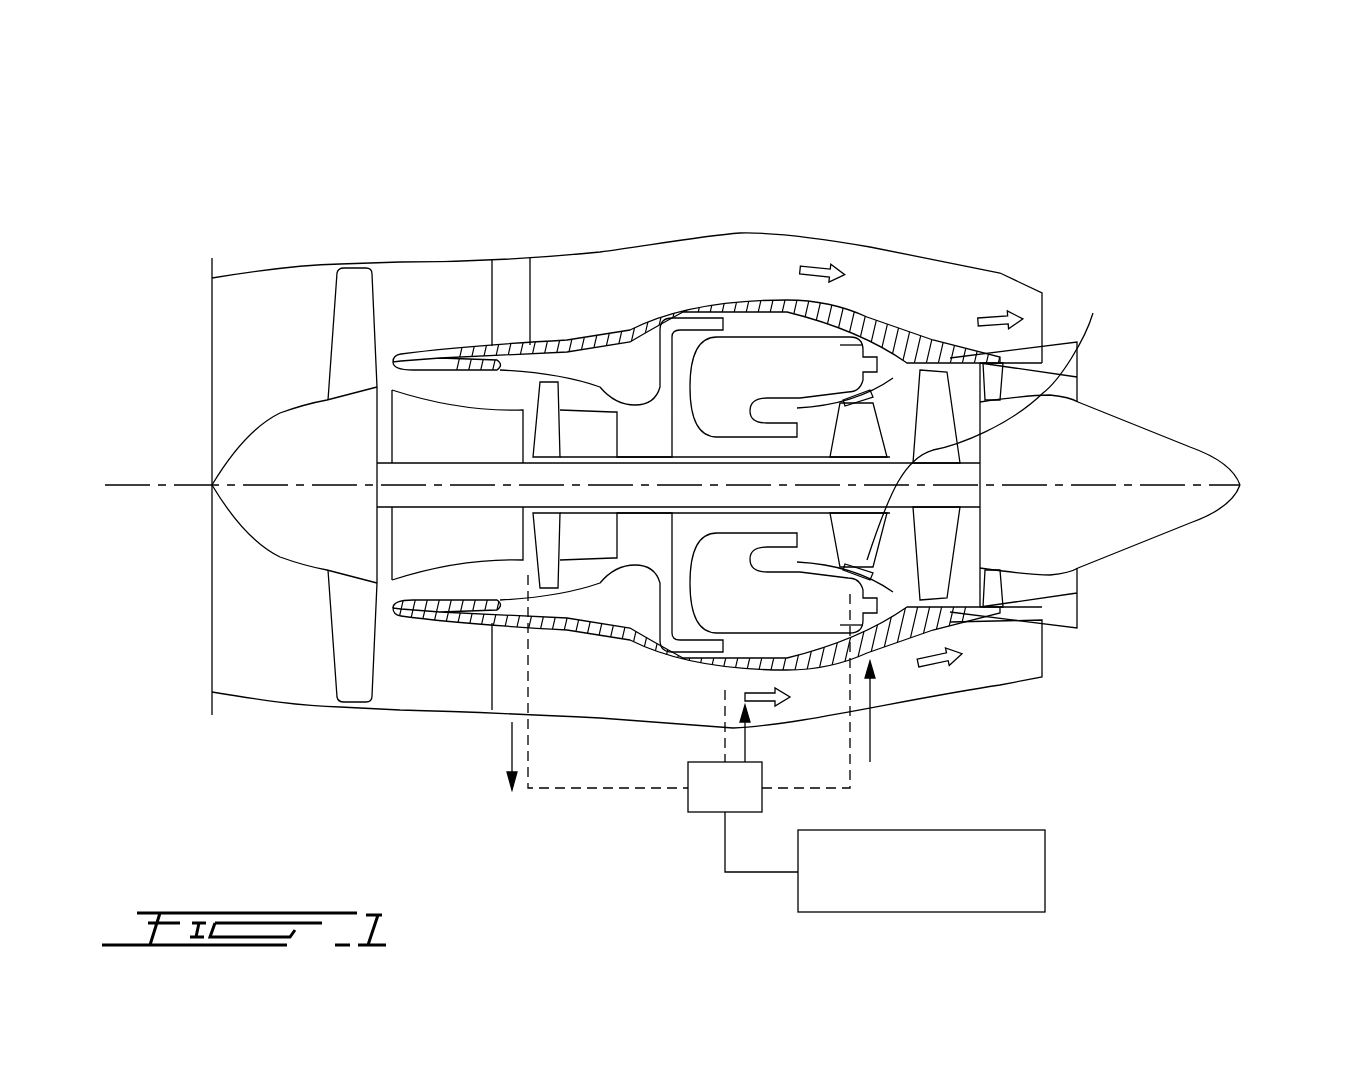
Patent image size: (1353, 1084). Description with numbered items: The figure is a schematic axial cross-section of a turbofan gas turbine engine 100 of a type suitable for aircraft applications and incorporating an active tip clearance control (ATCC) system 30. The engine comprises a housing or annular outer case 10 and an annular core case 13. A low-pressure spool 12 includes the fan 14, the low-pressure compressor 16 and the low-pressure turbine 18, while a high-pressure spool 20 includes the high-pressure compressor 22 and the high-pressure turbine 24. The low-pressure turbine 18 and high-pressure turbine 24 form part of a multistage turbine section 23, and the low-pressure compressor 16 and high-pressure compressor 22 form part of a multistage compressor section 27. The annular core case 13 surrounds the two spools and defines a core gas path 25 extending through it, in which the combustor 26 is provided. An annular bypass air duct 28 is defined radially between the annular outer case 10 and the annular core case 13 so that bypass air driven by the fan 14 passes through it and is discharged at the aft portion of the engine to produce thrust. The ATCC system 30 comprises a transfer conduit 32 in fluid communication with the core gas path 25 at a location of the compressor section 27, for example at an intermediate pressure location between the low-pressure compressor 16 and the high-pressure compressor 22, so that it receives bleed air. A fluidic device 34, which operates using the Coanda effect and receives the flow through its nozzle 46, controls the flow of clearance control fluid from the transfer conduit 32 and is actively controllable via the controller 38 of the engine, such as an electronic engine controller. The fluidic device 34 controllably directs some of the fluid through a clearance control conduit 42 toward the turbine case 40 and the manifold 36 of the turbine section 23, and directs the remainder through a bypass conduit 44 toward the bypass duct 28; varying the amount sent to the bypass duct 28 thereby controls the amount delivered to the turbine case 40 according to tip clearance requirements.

The annular outer case 10 is at (663, 243).
The turbofan gas turbine engine 100 is at (1055, 157).
The low-pressure spool 12 is at (458, 437).
The annular core case 13 is at (727, 295).
The fan 14 is at (328, 312).
The low-pressure compressor 16 is at (407, 423).
The low-pressure turbine 18 is at (968, 385).
The high-pressure spool 20 is at (610, 400).
The high-pressure compressor 22 is at (577, 392).
The multistage turbine section 23 is at (918, 342).
The high-pressure turbine 24 is at (872, 345).
The core gas path 25 is at (442, 577).
The combustor 26 is at (792, 360).
The multistage compressor section 27 is at (512, 390).
The annular bypass air duct 28 is at (636, 292).
The active tip clearance control (ATCC) system 30 is at (893, 748).
The transfer conduit 32 is at (573, 790).
The fluidic device 34 is at (712, 800).
The manifold 36 is at (880, 592).
The controller 38 is at (909, 900).
The turbine case 40 is at (990, 419).
The clearance control conduit 42 is at (850, 770).
The bypass conduit 44 is at (725, 742).
The nozzle 46 is at (512, 745).